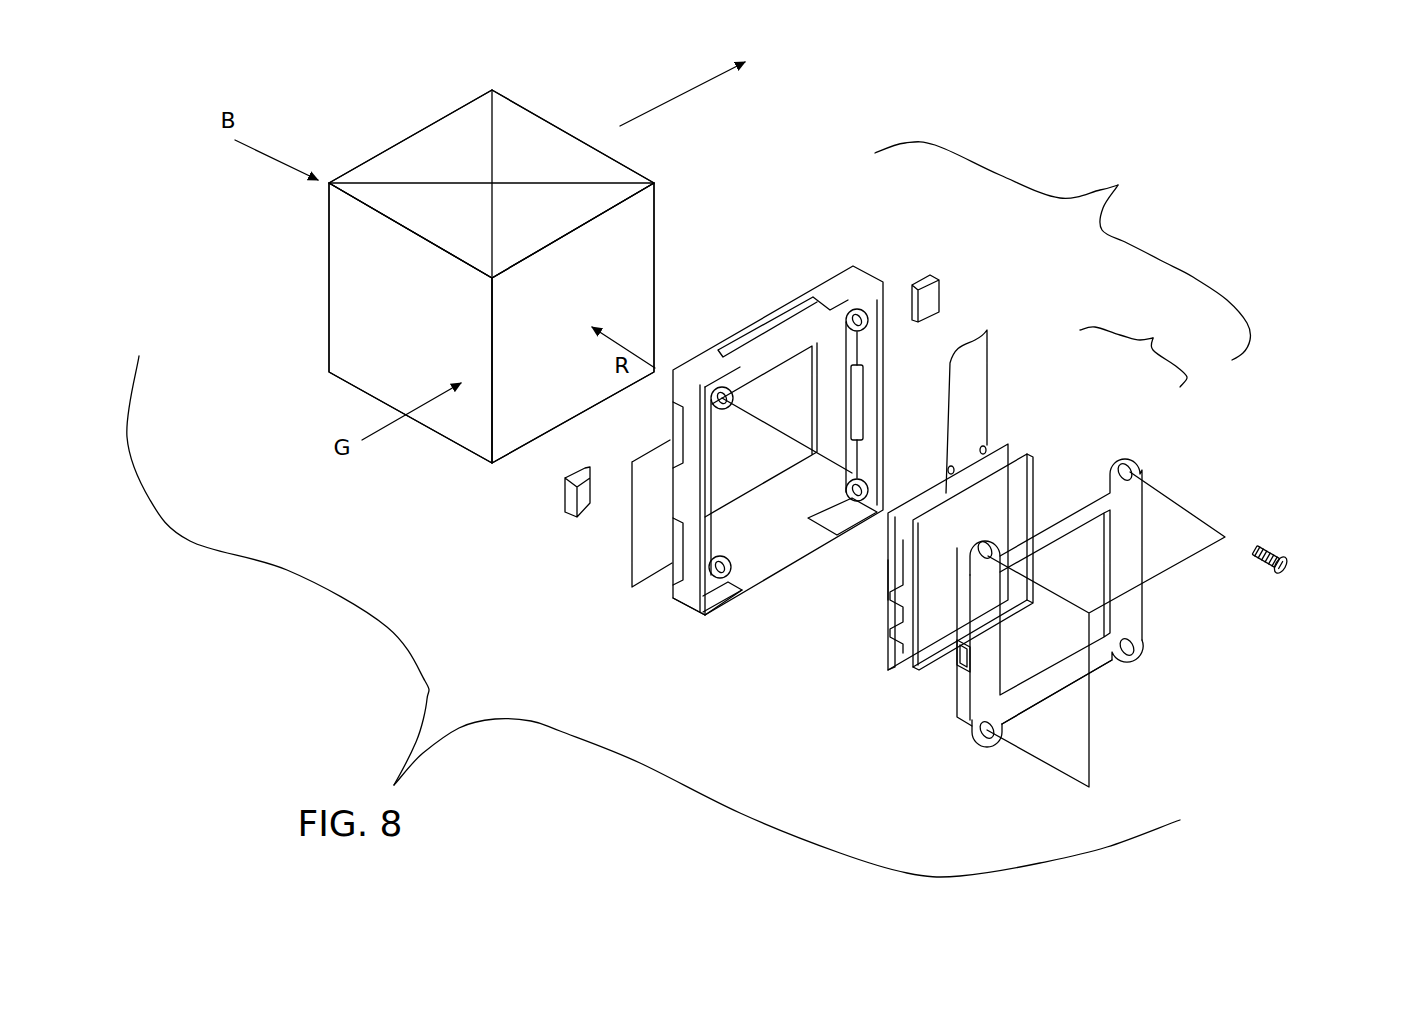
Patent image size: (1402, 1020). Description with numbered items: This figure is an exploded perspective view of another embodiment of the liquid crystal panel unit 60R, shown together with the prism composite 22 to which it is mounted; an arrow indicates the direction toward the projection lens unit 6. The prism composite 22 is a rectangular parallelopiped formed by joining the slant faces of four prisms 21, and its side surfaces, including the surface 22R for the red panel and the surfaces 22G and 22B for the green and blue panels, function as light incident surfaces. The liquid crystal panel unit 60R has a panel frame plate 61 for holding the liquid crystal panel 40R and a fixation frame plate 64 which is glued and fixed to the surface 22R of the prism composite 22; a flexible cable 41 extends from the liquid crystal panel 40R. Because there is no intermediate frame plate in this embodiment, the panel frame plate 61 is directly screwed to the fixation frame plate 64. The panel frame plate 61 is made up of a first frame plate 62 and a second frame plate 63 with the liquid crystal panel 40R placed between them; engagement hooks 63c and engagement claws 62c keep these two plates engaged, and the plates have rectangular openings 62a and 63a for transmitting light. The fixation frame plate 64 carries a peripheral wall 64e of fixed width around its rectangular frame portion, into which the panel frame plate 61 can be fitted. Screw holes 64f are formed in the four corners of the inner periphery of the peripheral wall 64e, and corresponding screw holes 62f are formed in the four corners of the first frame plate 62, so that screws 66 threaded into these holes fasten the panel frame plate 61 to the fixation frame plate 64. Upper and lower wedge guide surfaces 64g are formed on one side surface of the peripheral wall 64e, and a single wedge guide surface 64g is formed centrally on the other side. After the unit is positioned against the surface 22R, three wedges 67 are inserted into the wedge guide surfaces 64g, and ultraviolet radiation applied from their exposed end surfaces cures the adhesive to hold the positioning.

The projection lens unit 6 is at (696, 79).
The prisms 21 is at (438, 168).
The prism composite 22 is at (468, 296).
The surface of the prism composite 22B is at (397, 160).
The surface of the prism composite 22R is at (628, 262).
The surface of the prism composite 22G is at (353, 317).
The liquid crystal panel 40R is at (1023, 510).
The flexible cable 41 is at (978, 398).
The liquid crystal panel unit 60R is at (1063, 251).
The panel frame plate 61 is at (1133, 347).
The first frame plate 62 is at (1055, 597).
The rectangular opening 62a is at (1020, 660).
The engagement claws 62c is at (960, 650).
The screw holes 62f is at (1133, 470).
The second frame plate 63 is at (945, 505).
The rectangular opening 63a is at (893, 572).
The engagement hooks 63c is at (893, 605).
The fixation frame plate 64 is at (763, 426).
The peripheral wall 64e is at (703, 605).
The screw holes 64f is at (870, 312).
The wedge guide surfaces 64g is at (850, 398).
The screws 66 is at (1293, 553).
The wedges 67 is at (563, 497).